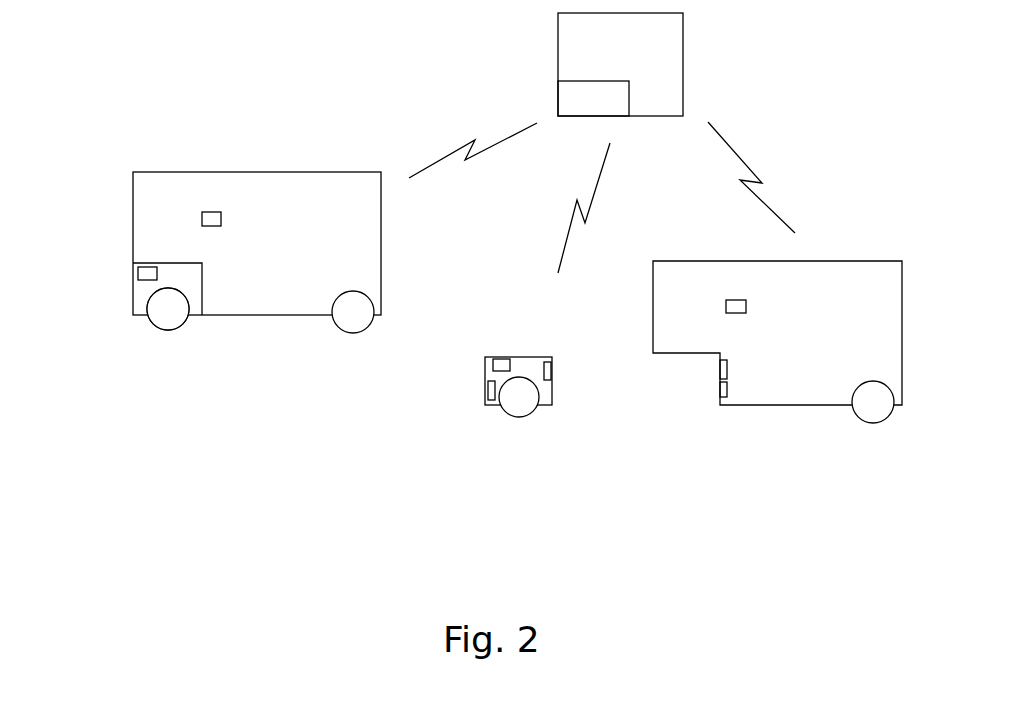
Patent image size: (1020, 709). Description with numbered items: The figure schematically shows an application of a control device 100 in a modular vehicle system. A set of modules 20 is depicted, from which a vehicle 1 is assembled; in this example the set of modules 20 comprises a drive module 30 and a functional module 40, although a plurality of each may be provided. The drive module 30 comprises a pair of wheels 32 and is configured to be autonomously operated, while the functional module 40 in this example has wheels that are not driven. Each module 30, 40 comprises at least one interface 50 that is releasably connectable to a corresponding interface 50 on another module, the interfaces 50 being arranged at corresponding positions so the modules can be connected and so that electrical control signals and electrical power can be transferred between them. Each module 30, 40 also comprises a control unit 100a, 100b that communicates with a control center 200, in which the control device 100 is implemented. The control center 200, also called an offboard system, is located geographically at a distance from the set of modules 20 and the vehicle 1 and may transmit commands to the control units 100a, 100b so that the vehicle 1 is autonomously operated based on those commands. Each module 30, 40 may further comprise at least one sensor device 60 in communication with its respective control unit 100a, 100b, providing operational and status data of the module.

The vehicle 1 is at (260, 286).
The set of modules 20 is at (637, 484).
The drive module 30 is at (133, 303).
The wheels 32 is at (542, 412).
The functional module 40 is at (381, 232).
The interface 50 is at (552, 370).
The sensor device 60 is at (485, 395).
The control device 100 is at (593, 98).
The control unit 100a is at (133, 276).
The control unit 100b is at (202, 220).
The control center 200 is at (620, 64).